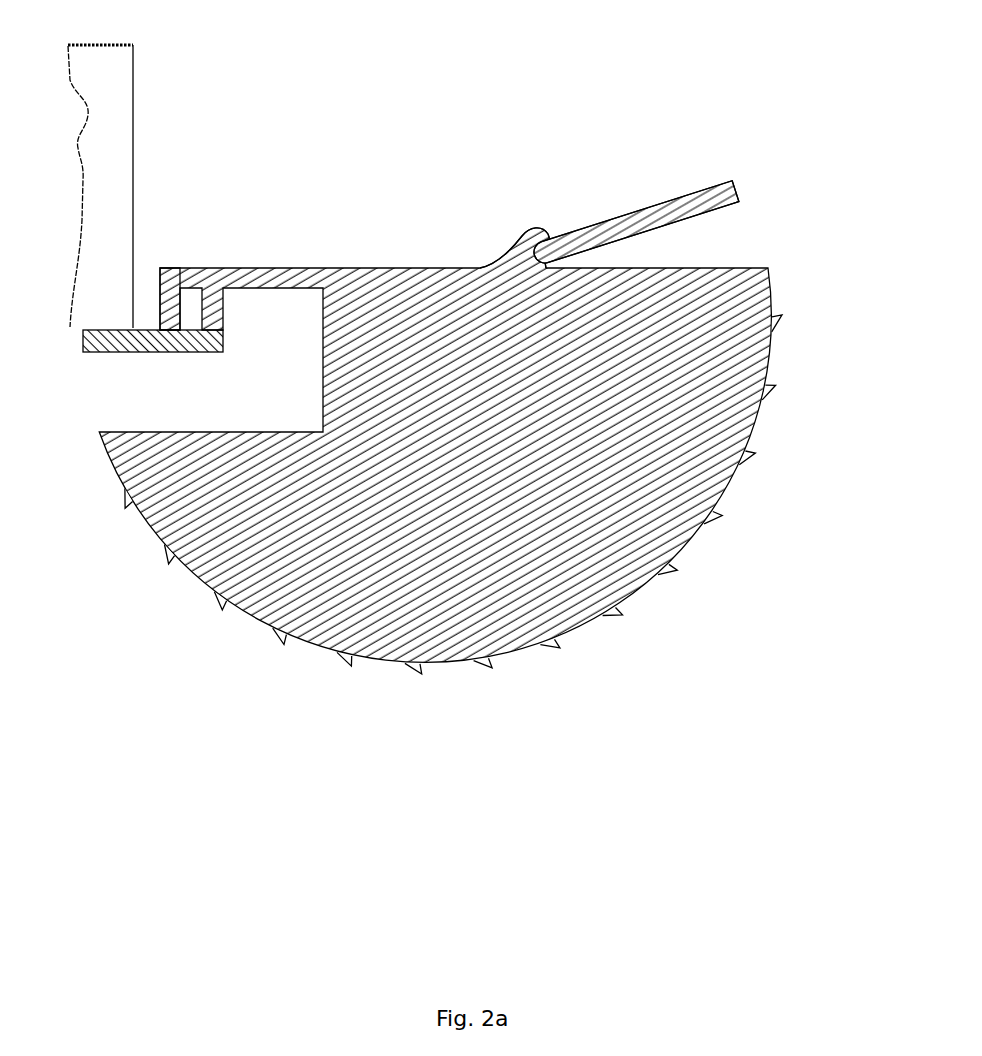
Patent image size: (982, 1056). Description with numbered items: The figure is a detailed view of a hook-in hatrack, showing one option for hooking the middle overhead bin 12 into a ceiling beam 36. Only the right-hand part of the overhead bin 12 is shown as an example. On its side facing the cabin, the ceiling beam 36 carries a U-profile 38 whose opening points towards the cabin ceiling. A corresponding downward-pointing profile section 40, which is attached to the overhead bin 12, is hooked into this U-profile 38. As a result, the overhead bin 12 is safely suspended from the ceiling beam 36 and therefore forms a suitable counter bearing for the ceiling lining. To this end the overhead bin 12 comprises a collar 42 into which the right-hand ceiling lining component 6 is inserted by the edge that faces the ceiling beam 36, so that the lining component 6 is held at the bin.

The ceiling lining component 6 is at (746, 188).
The middle overhead bin 12 is at (647, 265).
The ceiling beam 36 is at (120, 275).
The U-profile 38 is at (108, 352).
The profile section 40 is at (177, 277).
The collar 42 is at (540, 227).